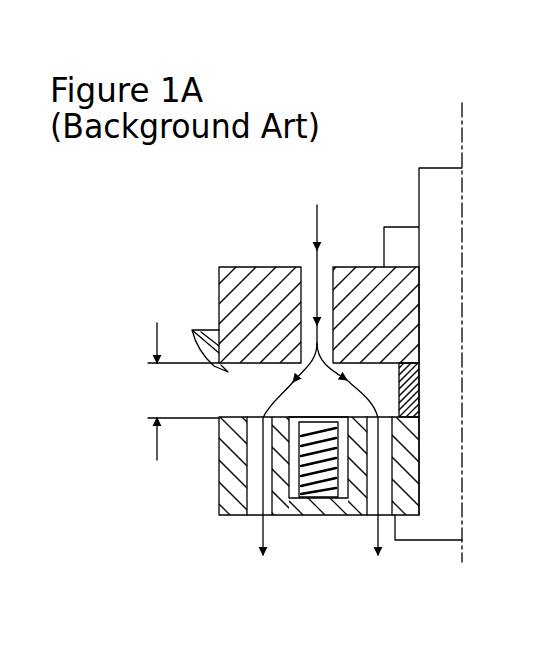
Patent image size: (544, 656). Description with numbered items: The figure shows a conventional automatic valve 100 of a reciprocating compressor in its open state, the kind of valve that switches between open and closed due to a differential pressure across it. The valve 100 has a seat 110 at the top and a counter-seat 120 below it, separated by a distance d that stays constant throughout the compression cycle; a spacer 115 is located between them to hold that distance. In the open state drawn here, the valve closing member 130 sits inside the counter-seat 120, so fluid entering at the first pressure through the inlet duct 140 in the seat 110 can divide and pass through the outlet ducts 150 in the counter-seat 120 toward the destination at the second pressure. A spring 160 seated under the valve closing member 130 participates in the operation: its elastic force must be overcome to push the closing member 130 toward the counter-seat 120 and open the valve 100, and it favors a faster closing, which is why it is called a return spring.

The automatic valve 100 is at (222, 218).
The seat 110 is at (228, 289).
The spacer 115 is at (408, 384).
The counter-seat 120 is at (228, 494).
The valve closing member 130 is at (333, 432).
The inlet duct 140 is at (325, 290).
The outlet ducts 150 is at (372, 508).
The spring 160 is at (320, 467).